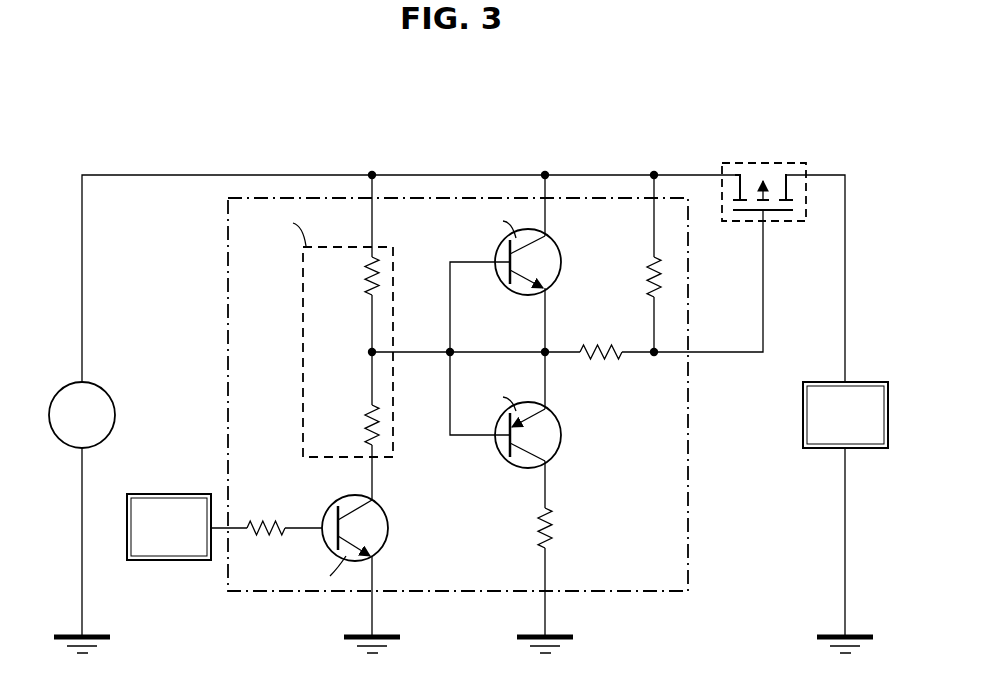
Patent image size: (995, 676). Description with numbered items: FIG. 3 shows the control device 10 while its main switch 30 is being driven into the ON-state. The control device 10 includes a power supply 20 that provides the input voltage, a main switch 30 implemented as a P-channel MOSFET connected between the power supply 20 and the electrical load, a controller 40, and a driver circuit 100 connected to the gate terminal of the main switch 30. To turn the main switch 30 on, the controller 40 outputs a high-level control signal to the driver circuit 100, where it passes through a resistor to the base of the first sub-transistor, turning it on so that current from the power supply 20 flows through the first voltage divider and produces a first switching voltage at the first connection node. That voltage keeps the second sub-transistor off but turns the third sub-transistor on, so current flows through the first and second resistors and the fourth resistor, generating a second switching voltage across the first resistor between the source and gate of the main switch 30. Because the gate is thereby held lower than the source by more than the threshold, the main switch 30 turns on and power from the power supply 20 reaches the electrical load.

The control device 10 is at (123, 100).
The power supply 20 is at (66, 388).
The main switch 30 is at (733, 162).
The controller 40 is at (170, 494).
The driver circuit 100 is at (228, 278).